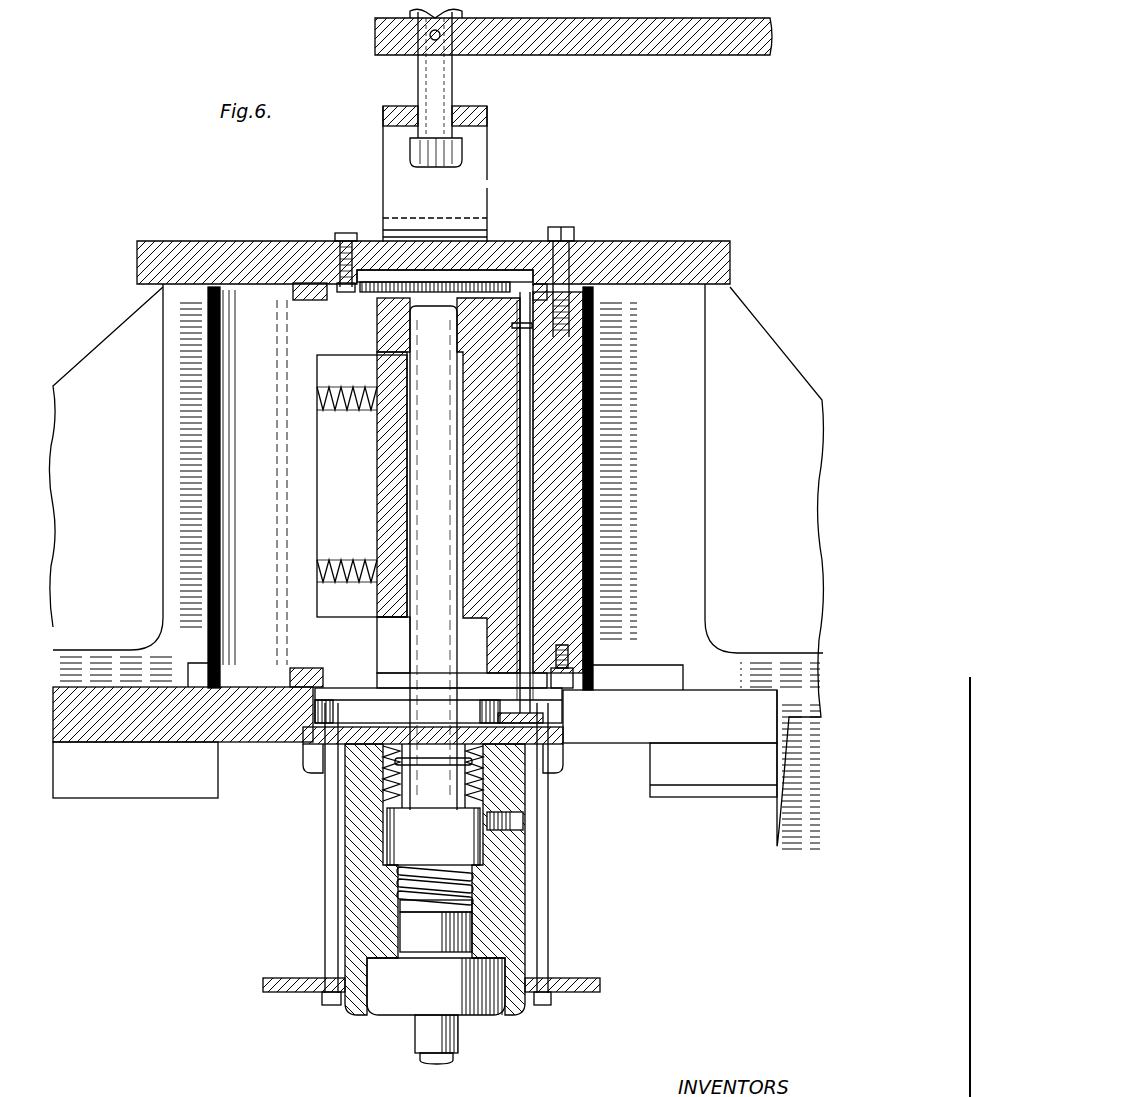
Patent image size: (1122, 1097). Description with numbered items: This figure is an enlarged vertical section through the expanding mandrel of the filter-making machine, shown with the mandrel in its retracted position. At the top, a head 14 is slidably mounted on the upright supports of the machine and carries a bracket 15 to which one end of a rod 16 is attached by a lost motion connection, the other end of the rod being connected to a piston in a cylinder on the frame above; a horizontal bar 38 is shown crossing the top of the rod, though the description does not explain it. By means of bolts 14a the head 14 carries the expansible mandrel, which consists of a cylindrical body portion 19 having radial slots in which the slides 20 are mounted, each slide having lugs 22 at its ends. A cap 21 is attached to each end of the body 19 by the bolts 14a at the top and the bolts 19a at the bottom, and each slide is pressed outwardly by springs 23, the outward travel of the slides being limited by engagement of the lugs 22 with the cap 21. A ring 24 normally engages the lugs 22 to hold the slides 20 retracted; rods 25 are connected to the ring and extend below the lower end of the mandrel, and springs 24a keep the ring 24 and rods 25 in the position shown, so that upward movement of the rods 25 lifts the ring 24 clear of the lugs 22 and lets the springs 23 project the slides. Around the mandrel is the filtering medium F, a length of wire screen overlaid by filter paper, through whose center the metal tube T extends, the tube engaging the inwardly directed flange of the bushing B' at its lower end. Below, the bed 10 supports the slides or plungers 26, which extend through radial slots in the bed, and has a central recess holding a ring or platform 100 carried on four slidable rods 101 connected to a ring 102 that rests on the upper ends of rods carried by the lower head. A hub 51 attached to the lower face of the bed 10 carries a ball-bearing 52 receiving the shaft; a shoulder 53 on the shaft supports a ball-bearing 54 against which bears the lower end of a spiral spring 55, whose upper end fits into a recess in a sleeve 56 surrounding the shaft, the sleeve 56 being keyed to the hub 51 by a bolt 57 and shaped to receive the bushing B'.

The bed 10 is at (62, 710).
The head 14 is at (694, 254).
The bolts 14a is at (572, 250).
The bracket 15 is at (489, 116).
The rod 16 is at (420, 32).
The cylindrical body portion 19 is at (570, 487).
The bolts 19a is at (578, 653).
The slides 20 is at (250, 488).
The cap 21 is at (545, 284).
The lugs 22 is at (360, 268).
The springs 23 is at (340, 412).
The ring 24 is at (519, 292).
The springs 24a is at (340, 248).
The rods 25 is at (523, 364).
The slides or plungers 26 is at (165, 420).
The arm 38 is at (652, 58).
The hub 51 is at (512, 881).
The ball-bearing 52 is at (396, 1004).
The shoulder 53 is at (405, 937).
The ball-bearing 54 is at (470, 915).
The spiral spring 55 is at (400, 893).
The sleeve 56 is at (433, 836).
The bolt 57 is at (522, 823).
The ring or platform 100 is at (302, 746).
The slidable rods 101 is at (336, 850).
The ring 102 is at (602, 985).
The bushing B' is at (433, 776).
The filtering medium F is at (594, 422).
The metal tube T is at (440, 648).